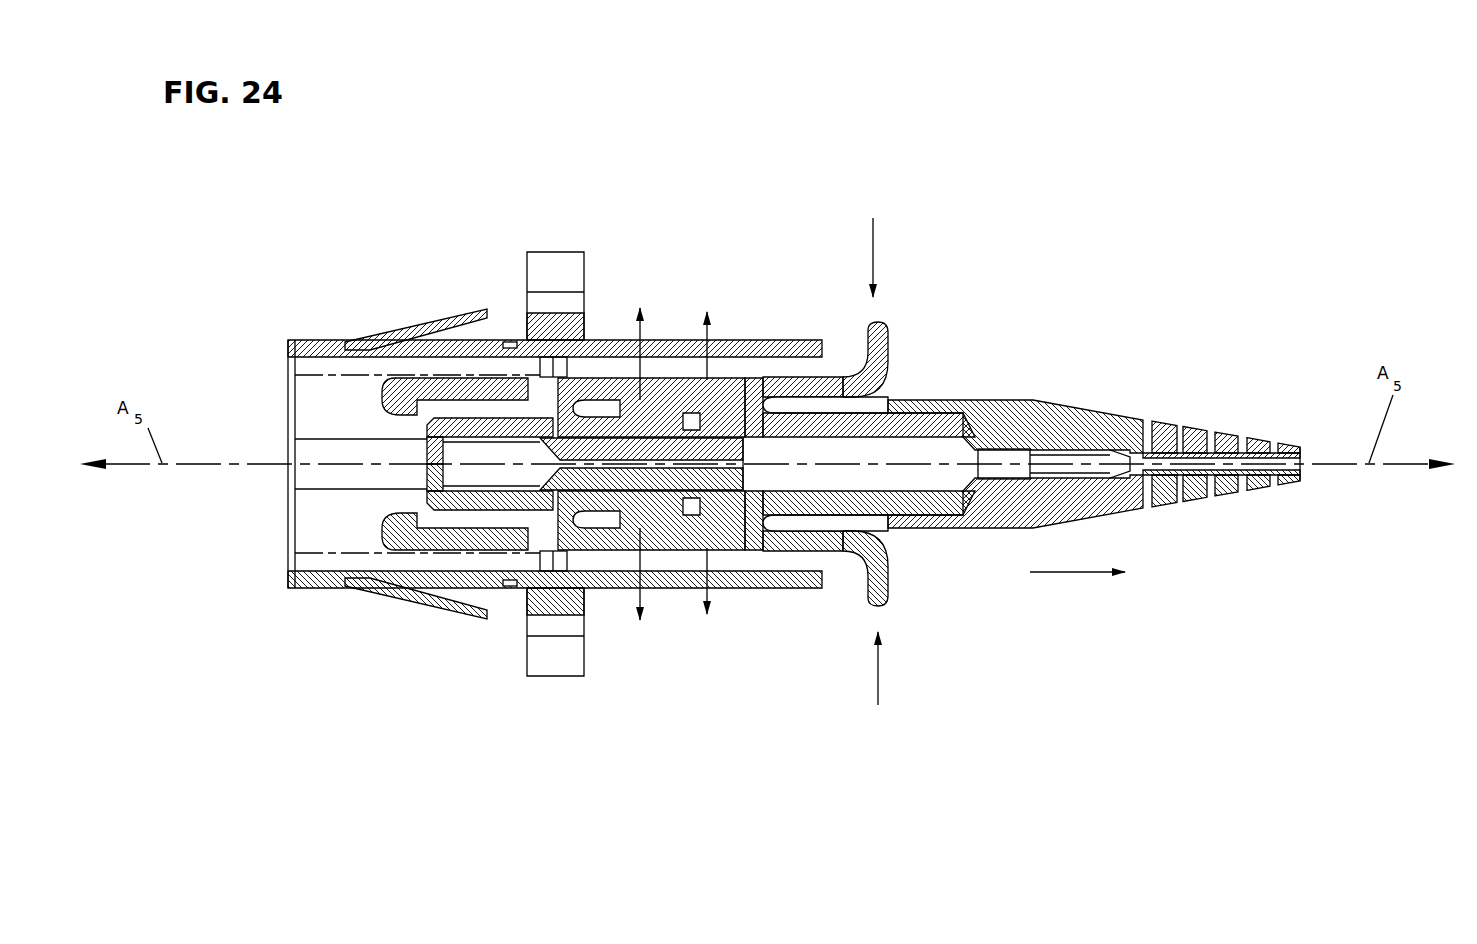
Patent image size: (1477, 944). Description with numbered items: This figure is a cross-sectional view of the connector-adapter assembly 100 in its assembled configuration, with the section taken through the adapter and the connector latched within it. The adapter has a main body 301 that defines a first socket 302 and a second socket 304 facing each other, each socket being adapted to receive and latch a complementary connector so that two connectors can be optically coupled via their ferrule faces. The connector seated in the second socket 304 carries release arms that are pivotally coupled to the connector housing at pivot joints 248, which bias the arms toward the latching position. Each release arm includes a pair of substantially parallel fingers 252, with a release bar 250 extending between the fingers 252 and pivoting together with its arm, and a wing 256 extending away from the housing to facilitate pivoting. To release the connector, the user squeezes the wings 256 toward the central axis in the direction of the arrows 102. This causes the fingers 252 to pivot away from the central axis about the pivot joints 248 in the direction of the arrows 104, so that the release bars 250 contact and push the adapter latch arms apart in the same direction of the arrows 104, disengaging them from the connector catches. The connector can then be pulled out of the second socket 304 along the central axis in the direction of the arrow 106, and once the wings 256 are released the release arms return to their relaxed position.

The connector-adapter assembly 100 is at (766, 163).
The arrows 102 is at (877, 250).
The arrows 104 is at (641, 400).
The arrow 106 is at (713, 340).
The pivot joint 248 is at (735, 400).
The release bar 250 is at (694, 402).
The fingers 252 is at (600, 406).
The wing 256 is at (883, 363).
The main body 301 is at (300, 352).
The first socket 302 is at (305, 527).
The second socket 304 is at (810, 560).